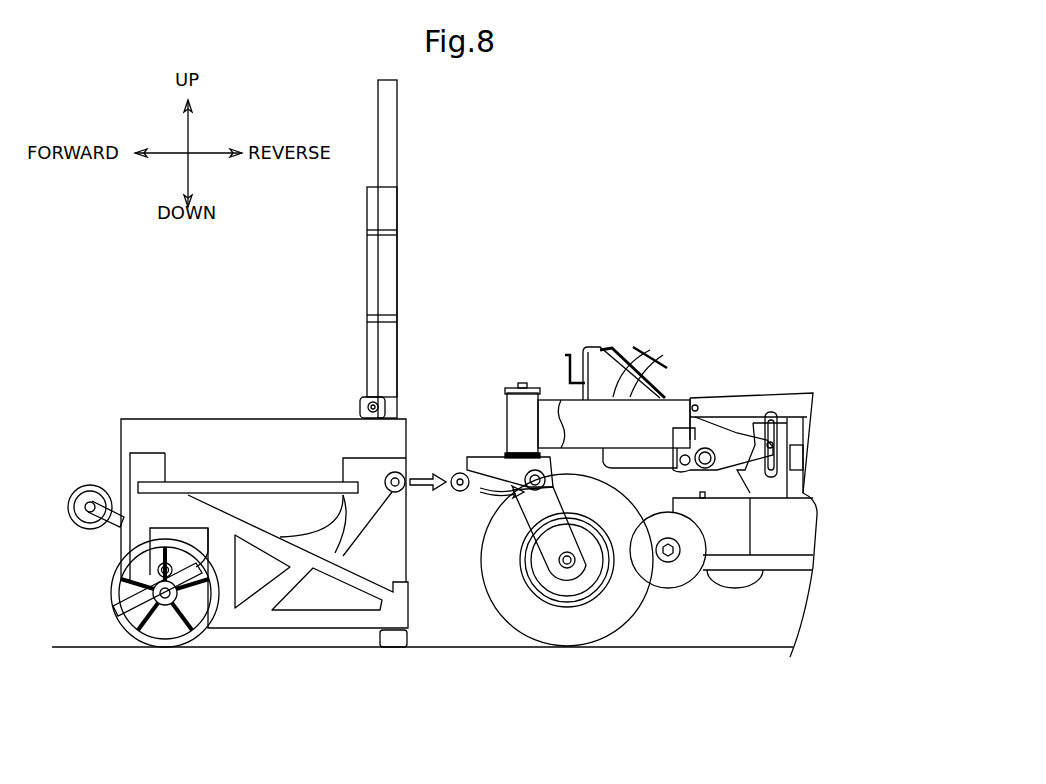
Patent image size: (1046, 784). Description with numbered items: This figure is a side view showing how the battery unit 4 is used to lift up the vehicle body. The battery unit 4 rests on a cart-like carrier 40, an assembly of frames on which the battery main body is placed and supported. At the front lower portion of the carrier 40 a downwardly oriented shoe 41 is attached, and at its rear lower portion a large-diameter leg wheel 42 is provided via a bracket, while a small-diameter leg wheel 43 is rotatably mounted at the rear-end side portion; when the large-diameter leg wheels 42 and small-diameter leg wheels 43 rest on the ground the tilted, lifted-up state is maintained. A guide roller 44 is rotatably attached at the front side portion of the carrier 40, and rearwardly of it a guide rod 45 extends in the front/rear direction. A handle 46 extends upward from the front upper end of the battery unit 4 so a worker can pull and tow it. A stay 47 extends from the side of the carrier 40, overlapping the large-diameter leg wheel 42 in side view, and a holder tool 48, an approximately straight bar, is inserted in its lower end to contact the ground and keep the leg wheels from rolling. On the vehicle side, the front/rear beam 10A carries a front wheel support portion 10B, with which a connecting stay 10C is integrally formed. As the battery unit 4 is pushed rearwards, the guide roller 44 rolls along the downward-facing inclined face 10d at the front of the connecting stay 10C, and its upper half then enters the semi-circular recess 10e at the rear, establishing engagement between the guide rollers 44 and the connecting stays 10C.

The battery unit 4 is at (268, 430).
The carrier 40 is at (253, 615).
The shoe 41 is at (397, 643).
The large-diameter leg wheel 42 is at (143, 543).
The small-diameter leg wheel 43 is at (72, 503).
The guide roller 44 is at (388, 478).
The guide rod 45 is at (185, 482).
The handle 46 is at (372, 218).
The stay 47 is at (110, 610).
The holder tool 48 is at (388, 162).
The front/rear beam 10A is at (552, 412).
The front wheel support portion 10B is at (515, 387).
The connecting stay 10C is at (483, 463).
The inclined face 10d is at (480, 477).
The recess 10e is at (508, 455).